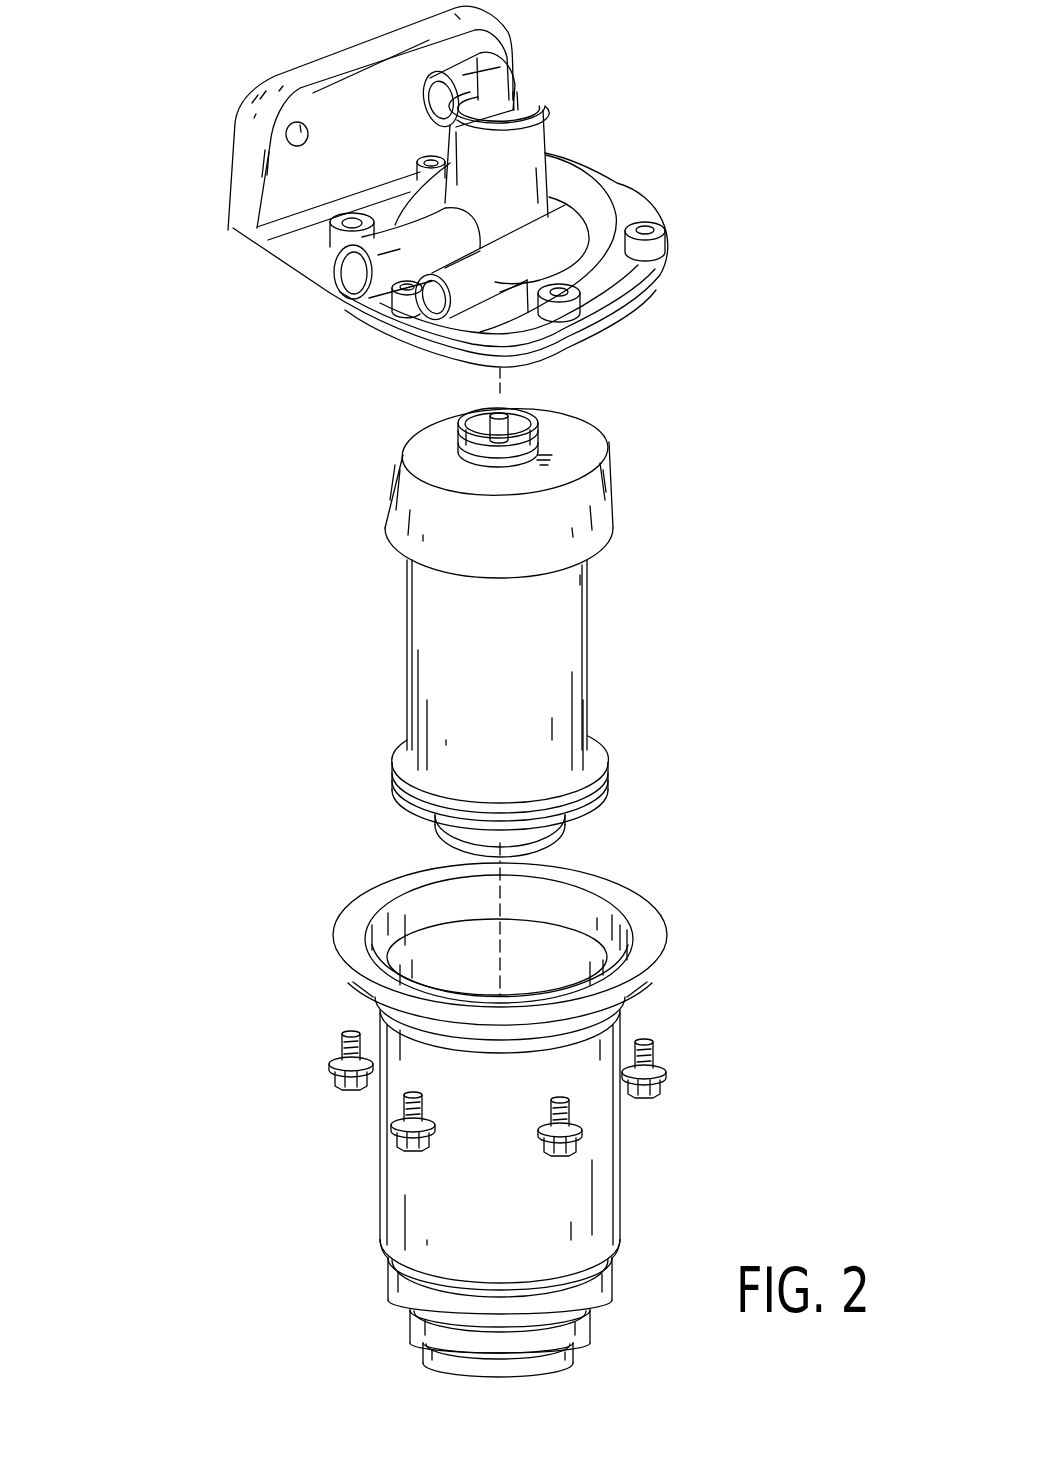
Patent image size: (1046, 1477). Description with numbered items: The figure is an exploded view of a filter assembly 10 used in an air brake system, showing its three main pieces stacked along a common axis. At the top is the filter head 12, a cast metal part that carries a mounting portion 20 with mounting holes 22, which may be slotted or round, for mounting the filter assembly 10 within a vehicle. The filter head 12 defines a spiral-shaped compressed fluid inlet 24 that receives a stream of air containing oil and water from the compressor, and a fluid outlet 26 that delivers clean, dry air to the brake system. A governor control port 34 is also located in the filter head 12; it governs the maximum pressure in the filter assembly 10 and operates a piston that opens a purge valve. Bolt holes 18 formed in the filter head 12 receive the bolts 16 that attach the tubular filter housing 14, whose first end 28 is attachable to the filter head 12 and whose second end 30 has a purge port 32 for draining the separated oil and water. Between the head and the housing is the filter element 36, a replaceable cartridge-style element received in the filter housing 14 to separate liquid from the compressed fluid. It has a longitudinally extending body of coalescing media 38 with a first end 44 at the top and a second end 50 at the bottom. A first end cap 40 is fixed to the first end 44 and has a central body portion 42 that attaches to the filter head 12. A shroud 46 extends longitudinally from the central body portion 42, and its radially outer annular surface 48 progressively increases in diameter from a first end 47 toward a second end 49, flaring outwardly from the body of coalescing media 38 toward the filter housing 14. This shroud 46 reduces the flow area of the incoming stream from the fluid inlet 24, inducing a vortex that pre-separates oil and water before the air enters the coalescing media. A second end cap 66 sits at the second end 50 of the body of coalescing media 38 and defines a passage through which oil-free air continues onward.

The filter assembly 10 is at (112, 187).
The filter head 12 is at (645, 280).
The filter housing 14 is at (612, 1150).
The bolts 16 is at (657, 1048).
The bolt holes 18 is at (592, 308).
The mounting portion 20 is at (353, 112).
The mounting holes 22 is at (296, 125).
The compressed fluid inlet 24 is at (425, 293).
The fluid outlet 26 is at (343, 268).
The first end 28 is at (647, 948).
The second end 30 is at (400, 1287).
The purge port 32 is at (437, 1358).
The governor control port 34 is at (495, 80).
The filter element 36 is at (613, 617).
The body of coalescing media 38 is at (563, 697).
The first end cap 40 is at (612, 488).
The central body portion 42 is at (460, 442).
The first end 44 is at (407, 577).
The shroud 46 is at (597, 508).
The first end 47 is at (600, 452).
The radially outer annular surface 48 is at (388, 497).
The second end 49 is at (597, 550).
The second end 50 is at (423, 763).
The second end cap 66 is at (607, 793).